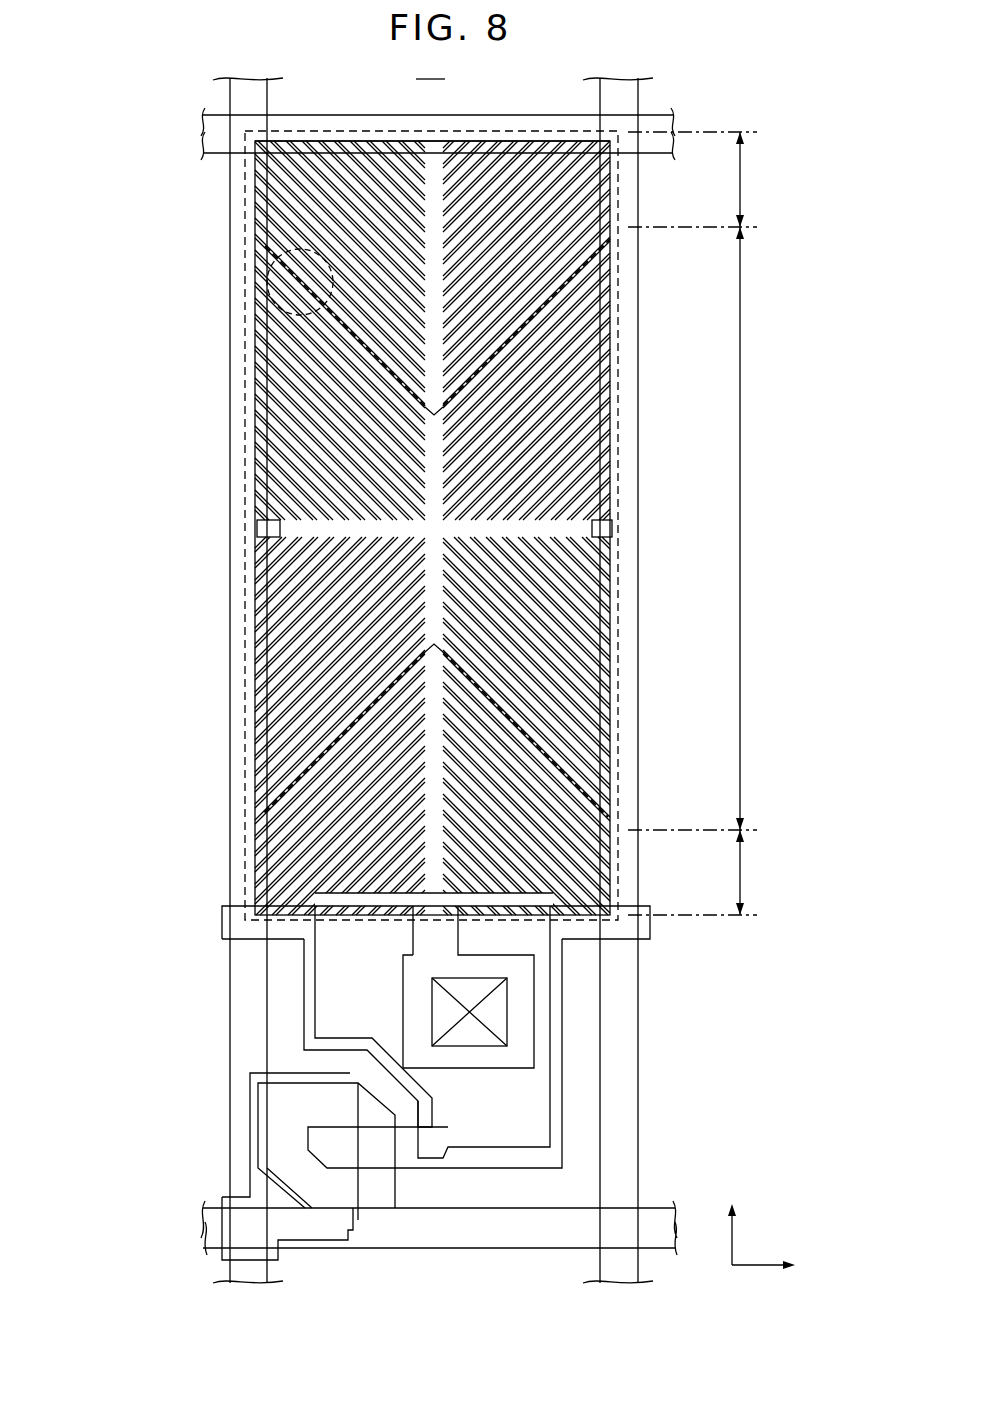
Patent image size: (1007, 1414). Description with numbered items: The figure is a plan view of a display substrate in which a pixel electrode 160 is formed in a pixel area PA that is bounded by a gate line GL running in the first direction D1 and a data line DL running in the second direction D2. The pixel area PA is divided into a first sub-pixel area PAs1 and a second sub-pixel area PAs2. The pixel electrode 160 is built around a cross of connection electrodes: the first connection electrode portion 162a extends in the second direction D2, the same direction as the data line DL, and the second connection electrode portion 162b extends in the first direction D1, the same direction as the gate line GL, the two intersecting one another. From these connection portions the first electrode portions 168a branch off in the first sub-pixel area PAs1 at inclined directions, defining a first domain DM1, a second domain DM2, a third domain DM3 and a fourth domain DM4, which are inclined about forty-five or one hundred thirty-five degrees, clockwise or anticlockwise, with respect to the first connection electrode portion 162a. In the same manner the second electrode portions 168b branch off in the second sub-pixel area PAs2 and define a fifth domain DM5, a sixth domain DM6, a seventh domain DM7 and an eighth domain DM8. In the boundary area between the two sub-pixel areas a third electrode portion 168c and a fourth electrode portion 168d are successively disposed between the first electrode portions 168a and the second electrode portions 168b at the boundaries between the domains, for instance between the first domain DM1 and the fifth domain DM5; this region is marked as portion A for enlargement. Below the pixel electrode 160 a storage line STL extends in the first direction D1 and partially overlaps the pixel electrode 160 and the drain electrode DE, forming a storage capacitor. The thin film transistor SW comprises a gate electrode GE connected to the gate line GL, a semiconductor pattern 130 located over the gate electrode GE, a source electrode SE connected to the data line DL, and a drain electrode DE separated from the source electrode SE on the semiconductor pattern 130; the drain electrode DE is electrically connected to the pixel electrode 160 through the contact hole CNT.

The pixel area PA is at (431, 487).
The data line DL is at (242, 1152).
The gate line GL is at (527, 1226).
The pixel electrode 160 is at (74, 205).
The first electrode portions 168a is at (262, 383).
The second electrode portions 168b is at (278, 218).
The third electrode portion 168c is at (255, 247).
The fourth electrode portion 168d is at (255, 228).
The portion A is at (268, 314).
The first connection electrode portion 162a is at (433, 474).
The second connection electrode portion 162b is at (277, 527).
The first domain DM1 is at (243, 433).
The second domain DM2 is at (626, 434).
The third domain DM3 is at (243, 608).
The fourth domain DM4 is at (626, 608).
The fifth domain DM5 is at (243, 194).
The sixth domain DM6 is at (626, 208).
The seventh domain DM7 is at (243, 841).
The eighth domain DM8 is at (626, 861).
The first sub-pixel area PAs1 is at (774, 528).
The second sub-pixel area PAs2 is at (720, 523).
The storage line STL is at (651, 932).
The contact hole CNT is at (482, 1010).
The drain electrode DE is at (427, 1172).
The gate electrode GE is at (388, 1188).
The semiconductor pattern 130 is at (360, 1180).
The source electrode SE is at (345, 1237).
The thin film transistor SW is at (465, 1304).
The first direction D1 is at (781, 1264).
The second direction D2 is at (733, 1220).